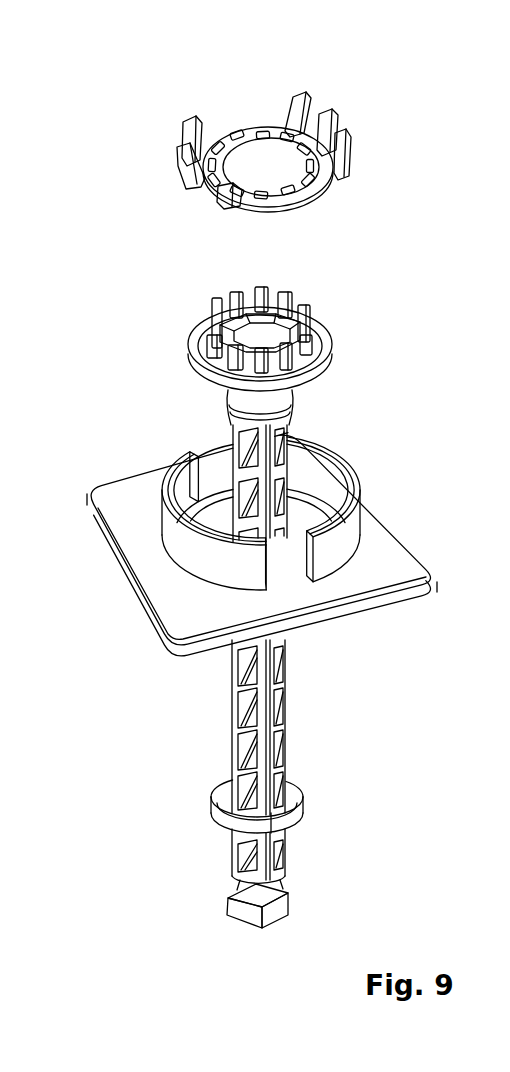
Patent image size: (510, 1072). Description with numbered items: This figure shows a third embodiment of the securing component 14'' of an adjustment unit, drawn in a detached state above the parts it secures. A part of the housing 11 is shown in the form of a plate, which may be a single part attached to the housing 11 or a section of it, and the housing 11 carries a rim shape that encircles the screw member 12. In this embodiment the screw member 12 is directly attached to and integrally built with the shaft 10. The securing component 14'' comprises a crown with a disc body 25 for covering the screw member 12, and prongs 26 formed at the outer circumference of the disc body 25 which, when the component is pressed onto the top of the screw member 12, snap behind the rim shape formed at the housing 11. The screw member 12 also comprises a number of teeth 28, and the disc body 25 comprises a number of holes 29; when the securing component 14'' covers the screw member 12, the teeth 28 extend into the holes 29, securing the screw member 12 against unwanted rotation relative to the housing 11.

The shaft 10 is at (283, 465).
The housing 11 is at (107, 490).
The screw member 12 is at (188, 348).
The securing component 14'' is at (252, 123).
The disc body 25 is at (277, 175).
The prongs 26 is at (308, 99).
The teeth 28 is at (218, 305).
The holes 29 is at (243, 134).